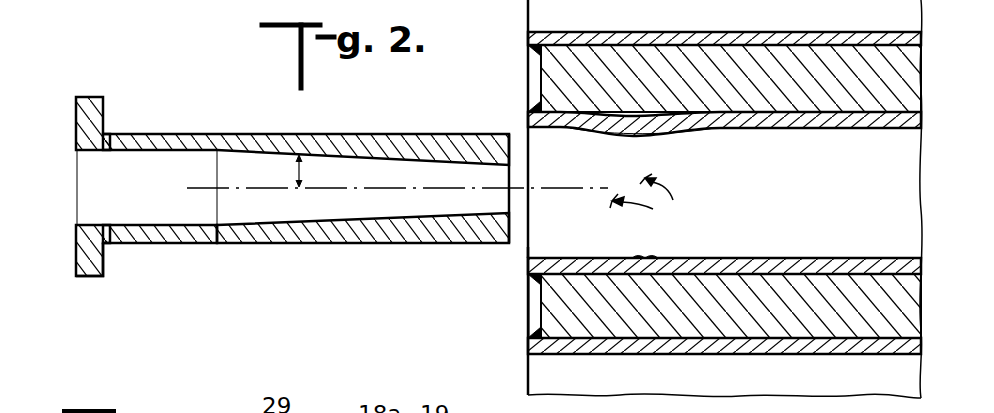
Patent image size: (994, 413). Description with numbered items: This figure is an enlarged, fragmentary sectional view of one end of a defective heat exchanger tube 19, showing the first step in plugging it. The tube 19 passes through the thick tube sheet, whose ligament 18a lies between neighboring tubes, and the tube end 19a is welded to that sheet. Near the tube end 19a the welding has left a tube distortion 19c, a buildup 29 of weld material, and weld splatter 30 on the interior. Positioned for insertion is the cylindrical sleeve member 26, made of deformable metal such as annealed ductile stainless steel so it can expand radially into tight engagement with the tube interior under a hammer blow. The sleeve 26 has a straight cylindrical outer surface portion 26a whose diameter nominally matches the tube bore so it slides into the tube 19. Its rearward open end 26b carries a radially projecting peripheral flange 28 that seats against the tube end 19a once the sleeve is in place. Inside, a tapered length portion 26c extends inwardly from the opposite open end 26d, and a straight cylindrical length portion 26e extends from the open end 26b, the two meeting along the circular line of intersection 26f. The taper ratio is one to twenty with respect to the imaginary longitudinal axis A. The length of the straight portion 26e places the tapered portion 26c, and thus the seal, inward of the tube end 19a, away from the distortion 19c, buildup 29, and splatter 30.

The cylindrical sleeve member 26 is at (319, 211).
The straight cylindrical outer surface portion 26a is at (356, 135).
The rearward or outer open end 26b is at (73, 218).
The tapered length portion 26c is at (386, 215).
The opposite open end 26d is at (508, 205).
The straight cylindrical length portion 26e is at (157, 220).
The circular line of intersection 26f is at (222, 213).
The peripheral flange 28 is at (86, 277).
The longitudinal axis A is at (252, 187).
The tube sheet ligament 18a is at (555, 72).
The heat exchanger tube 19 is at (604, 44).
The tube end 19a is at (528, 250).
The tube distortion 19c is at (663, 133).
The buildup of weld material 29 is at (532, 288).
The weld splatter 30 is at (645, 250).